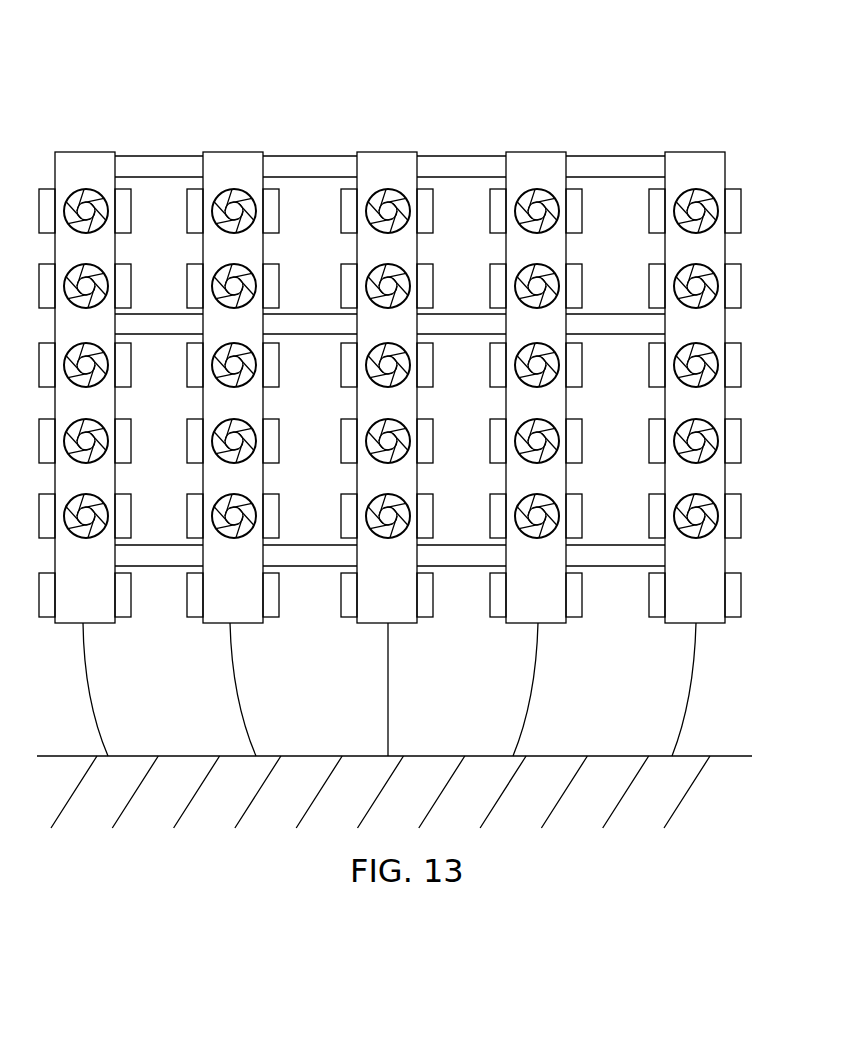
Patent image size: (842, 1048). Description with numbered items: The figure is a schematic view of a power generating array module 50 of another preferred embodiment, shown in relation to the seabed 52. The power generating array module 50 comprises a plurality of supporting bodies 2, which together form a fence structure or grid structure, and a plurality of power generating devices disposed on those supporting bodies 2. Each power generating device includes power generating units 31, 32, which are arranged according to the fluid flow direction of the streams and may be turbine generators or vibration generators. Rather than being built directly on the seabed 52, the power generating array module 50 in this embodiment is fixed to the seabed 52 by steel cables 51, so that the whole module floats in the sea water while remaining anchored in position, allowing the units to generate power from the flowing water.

The power generating array module 50 is at (677, 88).
The supporting body 2 is at (82, 162).
The power generating unit 31 is at (696, 365).
The power generating unit 32 is at (733, 292).
The steel cable 51 is at (691, 686).
The seabed 52 is at (717, 755).